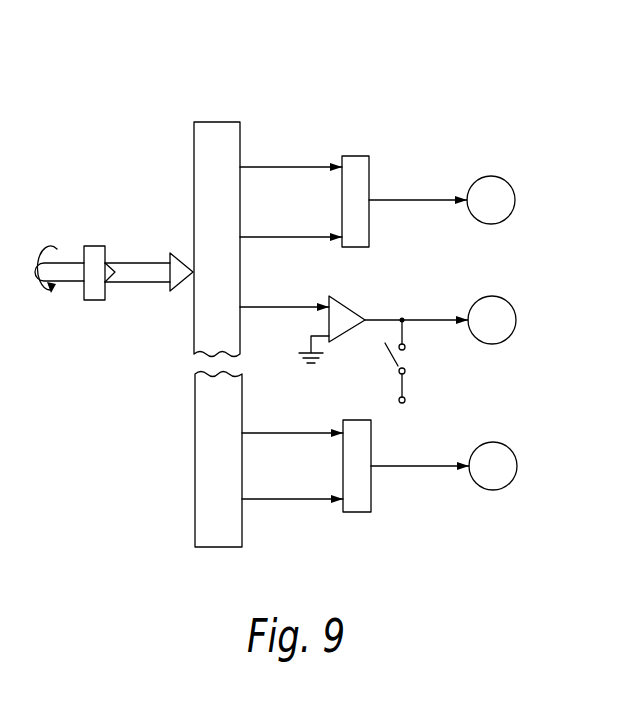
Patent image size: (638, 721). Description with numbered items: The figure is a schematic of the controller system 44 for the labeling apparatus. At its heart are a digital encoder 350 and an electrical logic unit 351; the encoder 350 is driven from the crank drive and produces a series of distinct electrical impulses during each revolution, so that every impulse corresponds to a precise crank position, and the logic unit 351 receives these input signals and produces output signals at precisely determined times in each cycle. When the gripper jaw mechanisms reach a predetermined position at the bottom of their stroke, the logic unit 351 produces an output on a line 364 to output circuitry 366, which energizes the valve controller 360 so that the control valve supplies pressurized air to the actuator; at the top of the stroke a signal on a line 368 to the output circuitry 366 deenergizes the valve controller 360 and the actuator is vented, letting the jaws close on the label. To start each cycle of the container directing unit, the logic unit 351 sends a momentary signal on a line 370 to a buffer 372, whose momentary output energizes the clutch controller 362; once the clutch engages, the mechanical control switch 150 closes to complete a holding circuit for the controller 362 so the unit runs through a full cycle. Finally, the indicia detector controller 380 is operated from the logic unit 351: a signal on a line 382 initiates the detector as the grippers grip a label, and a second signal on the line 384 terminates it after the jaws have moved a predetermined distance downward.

The controller system 44 is at (220, 66).
The logic unit 351 is at (230, 114).
The digital encoder 350 is at (93, 300).
The line 364 is at (254, 167).
The line 368 is at (256, 237).
The output circuitry 366 is at (371, 172).
The valve controller 360 is at (498, 180).
The line 370 is at (258, 307).
The buffer 372 is at (353, 310).
The clutch controller 362 is at (503, 297).
The mechanical control switch 150 is at (412, 358).
The line 382 is at (258, 433).
The line 384 is at (262, 499).
The indicia detector controller 380 is at (510, 445).